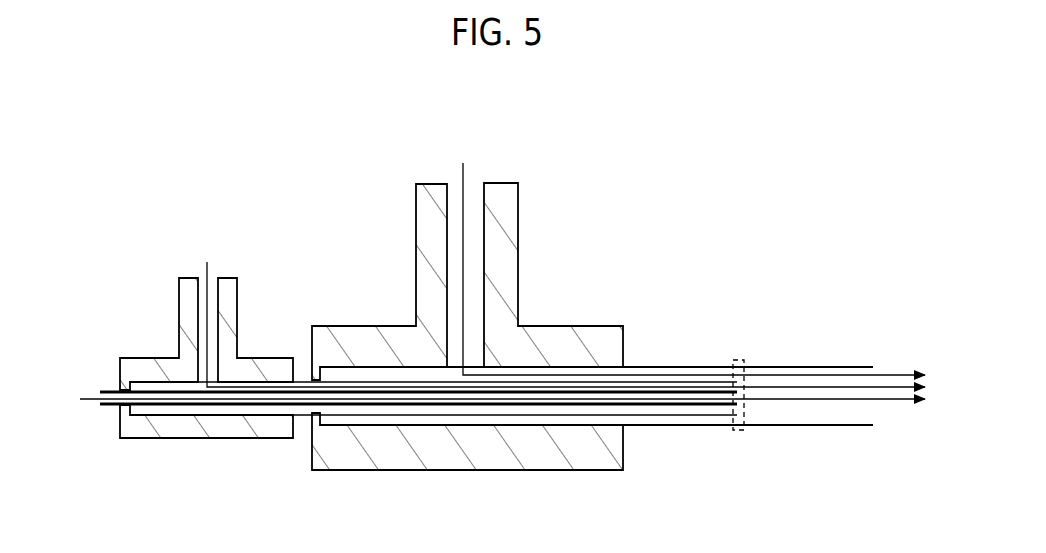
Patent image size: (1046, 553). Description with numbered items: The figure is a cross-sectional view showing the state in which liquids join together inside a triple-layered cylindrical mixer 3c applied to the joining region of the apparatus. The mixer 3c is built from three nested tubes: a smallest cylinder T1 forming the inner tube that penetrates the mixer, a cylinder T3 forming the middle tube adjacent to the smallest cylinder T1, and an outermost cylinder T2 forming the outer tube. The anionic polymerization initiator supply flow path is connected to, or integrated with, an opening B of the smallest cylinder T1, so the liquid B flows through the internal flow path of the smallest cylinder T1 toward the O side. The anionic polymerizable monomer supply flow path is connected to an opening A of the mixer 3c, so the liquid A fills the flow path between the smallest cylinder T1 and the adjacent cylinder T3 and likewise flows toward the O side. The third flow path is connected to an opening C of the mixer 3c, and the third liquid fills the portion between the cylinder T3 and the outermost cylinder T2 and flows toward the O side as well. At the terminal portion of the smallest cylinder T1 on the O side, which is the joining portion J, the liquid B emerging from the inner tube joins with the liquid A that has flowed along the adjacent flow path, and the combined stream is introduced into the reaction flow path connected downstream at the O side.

The triple-layered cylindrical mixer 3c is at (428, 293).
The smallest cylinder T1 is at (105, 408).
The outermost cylinder T2 is at (663, 427).
The cylinder adjacent to the smallest cylinder T3 is at (727, 425).
The opening A is at (561, 310).
The opening B is at (490, 399).
The opening C is at (689, 255).
The O side O is at (932, 395).
The joining portion J is at (737, 359).